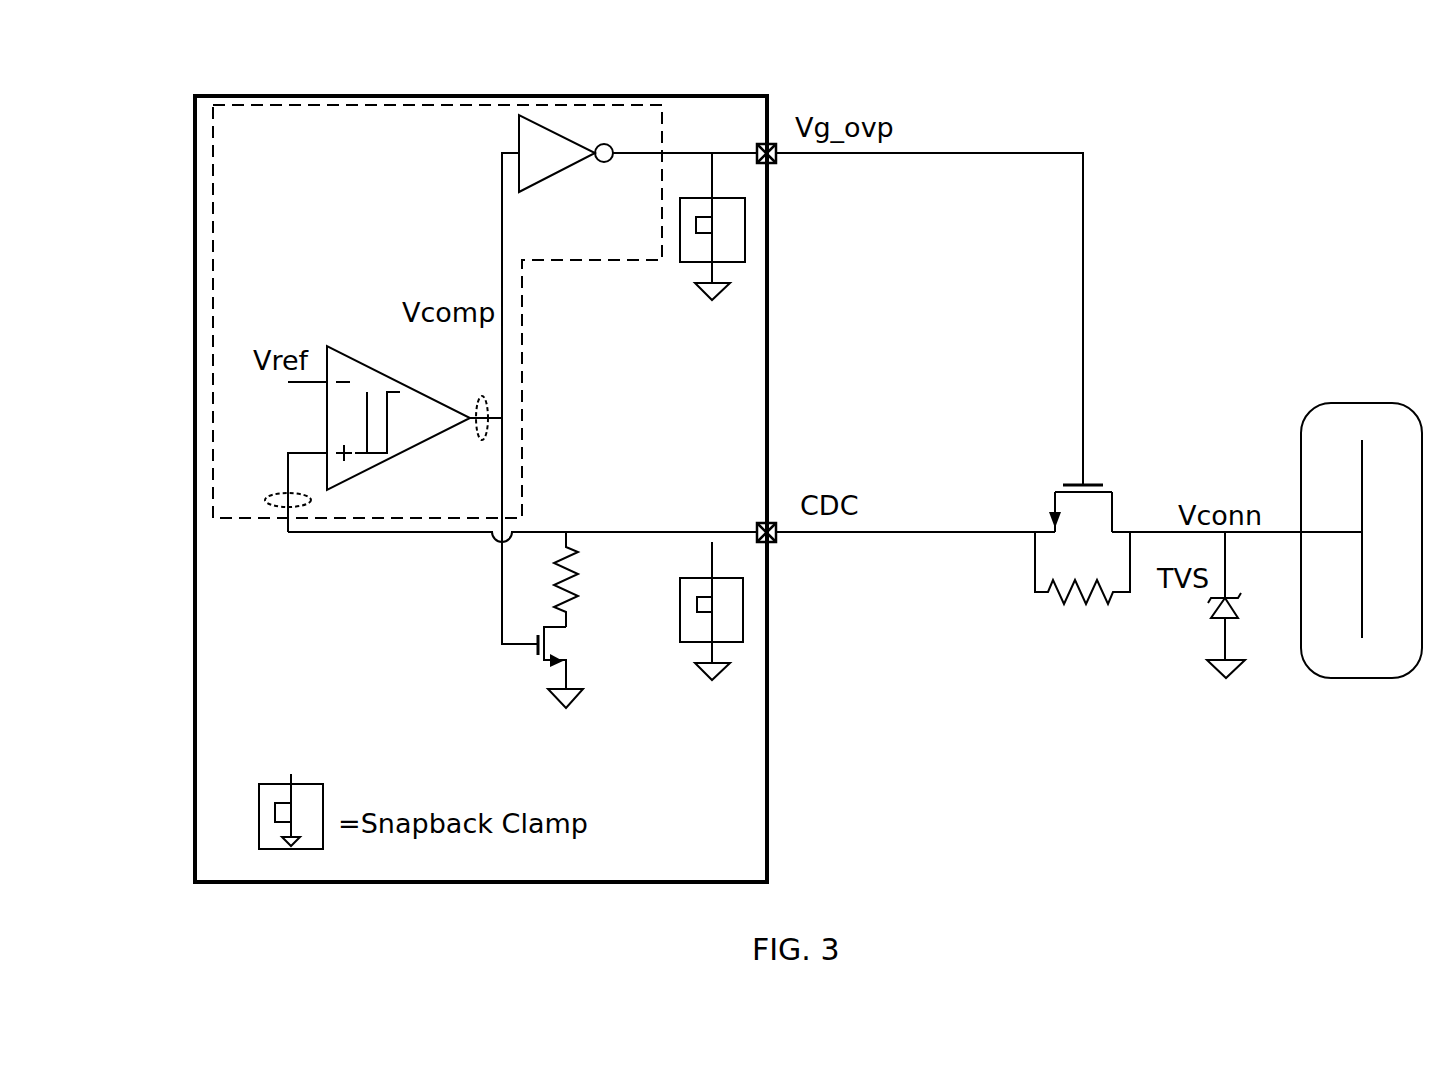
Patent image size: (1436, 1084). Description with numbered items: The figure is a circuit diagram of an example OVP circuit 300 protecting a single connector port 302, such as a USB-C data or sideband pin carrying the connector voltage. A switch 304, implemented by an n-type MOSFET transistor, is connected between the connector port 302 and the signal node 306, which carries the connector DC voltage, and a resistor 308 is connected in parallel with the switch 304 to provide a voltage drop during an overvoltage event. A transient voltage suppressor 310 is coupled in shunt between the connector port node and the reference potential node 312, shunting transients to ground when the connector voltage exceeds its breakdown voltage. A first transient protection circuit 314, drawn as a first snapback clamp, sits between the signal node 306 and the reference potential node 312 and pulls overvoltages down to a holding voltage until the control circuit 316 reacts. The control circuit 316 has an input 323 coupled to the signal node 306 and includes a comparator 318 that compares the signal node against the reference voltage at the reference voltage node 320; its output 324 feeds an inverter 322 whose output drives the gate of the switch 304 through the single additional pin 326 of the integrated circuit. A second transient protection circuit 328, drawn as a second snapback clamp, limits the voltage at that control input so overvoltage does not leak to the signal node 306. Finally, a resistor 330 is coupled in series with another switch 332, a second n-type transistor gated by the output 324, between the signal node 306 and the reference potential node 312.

The OVP circuit 300 is at (152, 66).
The control circuit 316 is at (290, 105).
The inverter 322 is at (566, 170).
The single additional pin 326 is at (772, 165).
The second transient protection circuit 328 is at (688, 262).
The output 324 is at (480, 396).
The reference voltage node 320 is at (290, 384).
The input 323 is at (287, 493).
The comparator 318 is at (358, 478).
The resistor 330 is at (553, 585).
The other switch 332 is at (551, 667).
The signal node 306 is at (772, 544).
The first transient protection circuit 314 is at (742, 642).
The switch 304 is at (1090, 485).
The resistor 308 is at (1050, 598).
The transient voltage suppressor 310 is at (1222, 617).
The reference potential node 312 is at (1220, 672).
The connector port 302 is at (1312, 418).